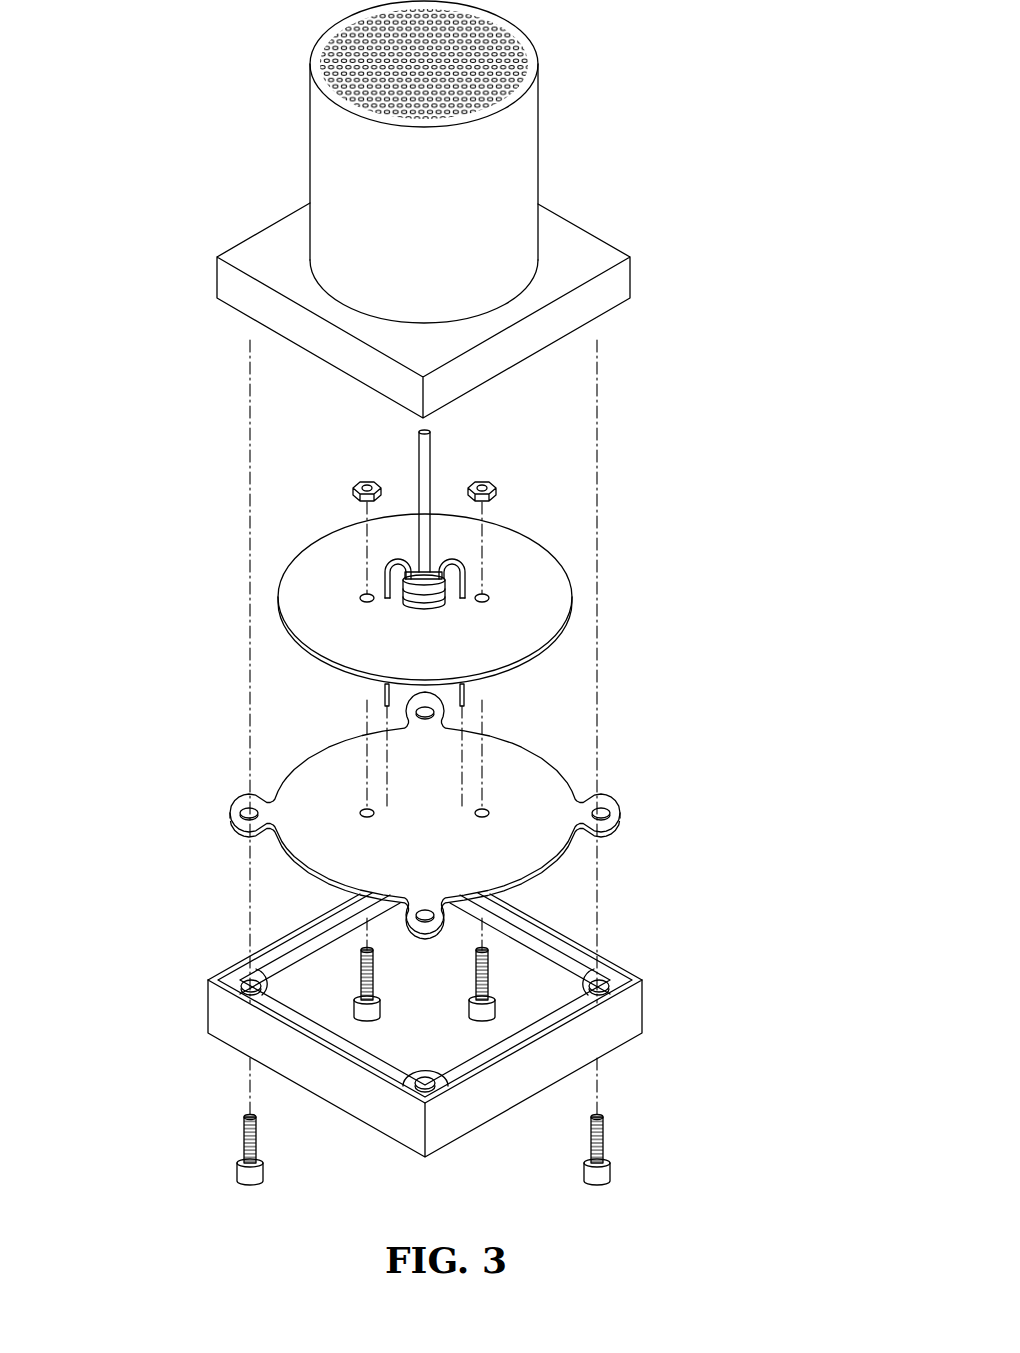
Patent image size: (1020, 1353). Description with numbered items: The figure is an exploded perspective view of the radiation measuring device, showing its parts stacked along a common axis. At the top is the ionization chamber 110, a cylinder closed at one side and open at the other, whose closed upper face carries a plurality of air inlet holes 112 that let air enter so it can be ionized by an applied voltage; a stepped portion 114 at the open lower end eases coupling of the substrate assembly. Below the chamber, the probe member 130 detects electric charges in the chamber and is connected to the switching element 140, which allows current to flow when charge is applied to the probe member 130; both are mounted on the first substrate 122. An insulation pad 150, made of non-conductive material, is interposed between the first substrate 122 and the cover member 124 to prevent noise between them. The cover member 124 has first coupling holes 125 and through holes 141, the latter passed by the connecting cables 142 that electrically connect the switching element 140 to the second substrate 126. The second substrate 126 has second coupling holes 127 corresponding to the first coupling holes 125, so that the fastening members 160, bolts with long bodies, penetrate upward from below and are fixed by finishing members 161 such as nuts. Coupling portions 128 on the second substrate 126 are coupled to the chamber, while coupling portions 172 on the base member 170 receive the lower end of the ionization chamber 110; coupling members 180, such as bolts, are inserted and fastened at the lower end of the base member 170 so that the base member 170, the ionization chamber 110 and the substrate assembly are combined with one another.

The ionization chamber 110 is at (522, 152).
The air inlet holes 112 is at (535, 62).
The stepped portion 114 is at (583, 257).
The first substrate 122 is at (407, 604).
The cover member 124 is at (557, 592).
The first coupling holes 125 is at (488, 596).
The second substrate 126 is at (305, 838).
The second coupling holes 127 is at (489, 811).
The coupling portions 128 is at (410, 712).
The probe member 130 is at (431, 448).
The switching element 140 is at (380, 580).
The through holes 141 is at (388, 600).
The connecting cables 142 is at (386, 568).
The insulation pad 150 is at (447, 597).
The fastening members 160 is at (355, 968).
The finishing members 161 is at (356, 481).
The base member 170 is at (622, 1012).
The coupling portions 172 is at (607, 982).
The coupling members 180 is at (612, 1172).